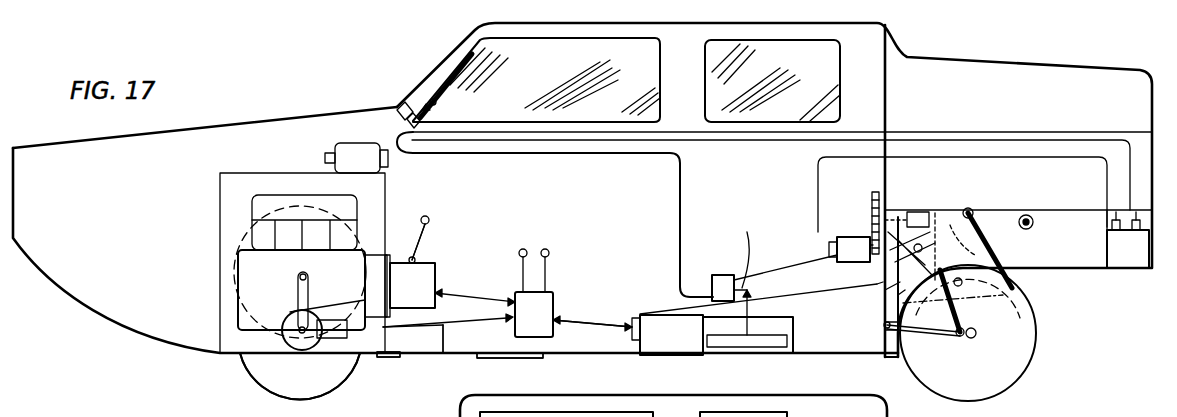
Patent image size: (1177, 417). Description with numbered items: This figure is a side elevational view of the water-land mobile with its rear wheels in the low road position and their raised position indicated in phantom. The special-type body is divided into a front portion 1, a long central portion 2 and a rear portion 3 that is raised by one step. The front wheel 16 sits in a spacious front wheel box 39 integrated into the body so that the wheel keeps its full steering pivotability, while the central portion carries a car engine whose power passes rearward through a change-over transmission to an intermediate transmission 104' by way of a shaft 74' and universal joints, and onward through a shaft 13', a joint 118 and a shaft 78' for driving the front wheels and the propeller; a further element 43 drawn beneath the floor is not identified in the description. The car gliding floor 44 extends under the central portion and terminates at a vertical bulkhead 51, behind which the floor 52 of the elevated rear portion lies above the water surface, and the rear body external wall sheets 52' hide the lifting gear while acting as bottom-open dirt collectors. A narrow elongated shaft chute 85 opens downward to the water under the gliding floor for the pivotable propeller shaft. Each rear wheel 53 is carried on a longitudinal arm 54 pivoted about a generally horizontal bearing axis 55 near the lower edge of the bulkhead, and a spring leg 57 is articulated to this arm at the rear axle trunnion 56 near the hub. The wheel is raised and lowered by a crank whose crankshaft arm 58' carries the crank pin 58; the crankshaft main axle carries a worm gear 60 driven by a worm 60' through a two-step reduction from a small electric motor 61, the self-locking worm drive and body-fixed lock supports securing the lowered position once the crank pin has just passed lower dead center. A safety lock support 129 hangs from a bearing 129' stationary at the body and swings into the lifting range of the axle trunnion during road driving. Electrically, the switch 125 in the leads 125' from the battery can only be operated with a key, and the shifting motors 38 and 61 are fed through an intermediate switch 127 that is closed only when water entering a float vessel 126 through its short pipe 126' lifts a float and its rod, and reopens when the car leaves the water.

The front portion 1 is at (68, 184).
The central portion 2 is at (642, 194).
The rear portion 3 is at (1074, 104).
The shaft 13′ is at (447, 293).
The front wheel 16 is at (248, 377).
The shifting electric motor 38 is at (345, 152).
The front wheel box 39 is at (247, 190).
The support bracket 43 is at (420, 354).
The car gliding floor 44 is at (618, 353).
The vertical bulkhead 51 is at (880, 357).
The floor 52 is at (1093, 273).
The rear body external wall sheets 52′ is at (1090, 258).
The rear wheel 53 is at (1027, 275).
The longitudinal arm 54 is at (942, 333).
The horizontal bearing axis 55 is at (885, 326).
The rear axle trunnion 56 is at (975, 335).
The spring leg 57 is at (1020, 312).
The crank pin 58 is at (873, 290).
The crankshaft arm 58′ is at (880, 276).
The worm gear 60 is at (888, 300).
The worm 60′ is at (918, 245).
The electric motor 61 is at (830, 247).
The shaft 74′ is at (472, 298).
The shaft 78′ is at (588, 325).
The shaft chute 85 is at (672, 312).
The intermediate transmission 104′ is at (533, 305).
The joint 118 is at (565, 326).
The switch 125 is at (402, 106).
The leads 125′ is at (752, 143).
The vessel 126 is at (703, 327).
The short length of pipe 126′ is at (775, 345).
The intermediate switch 127 is at (713, 283).
The lock supports 129 is at (997, 215).
The bearing 129′ is at (965, 220).